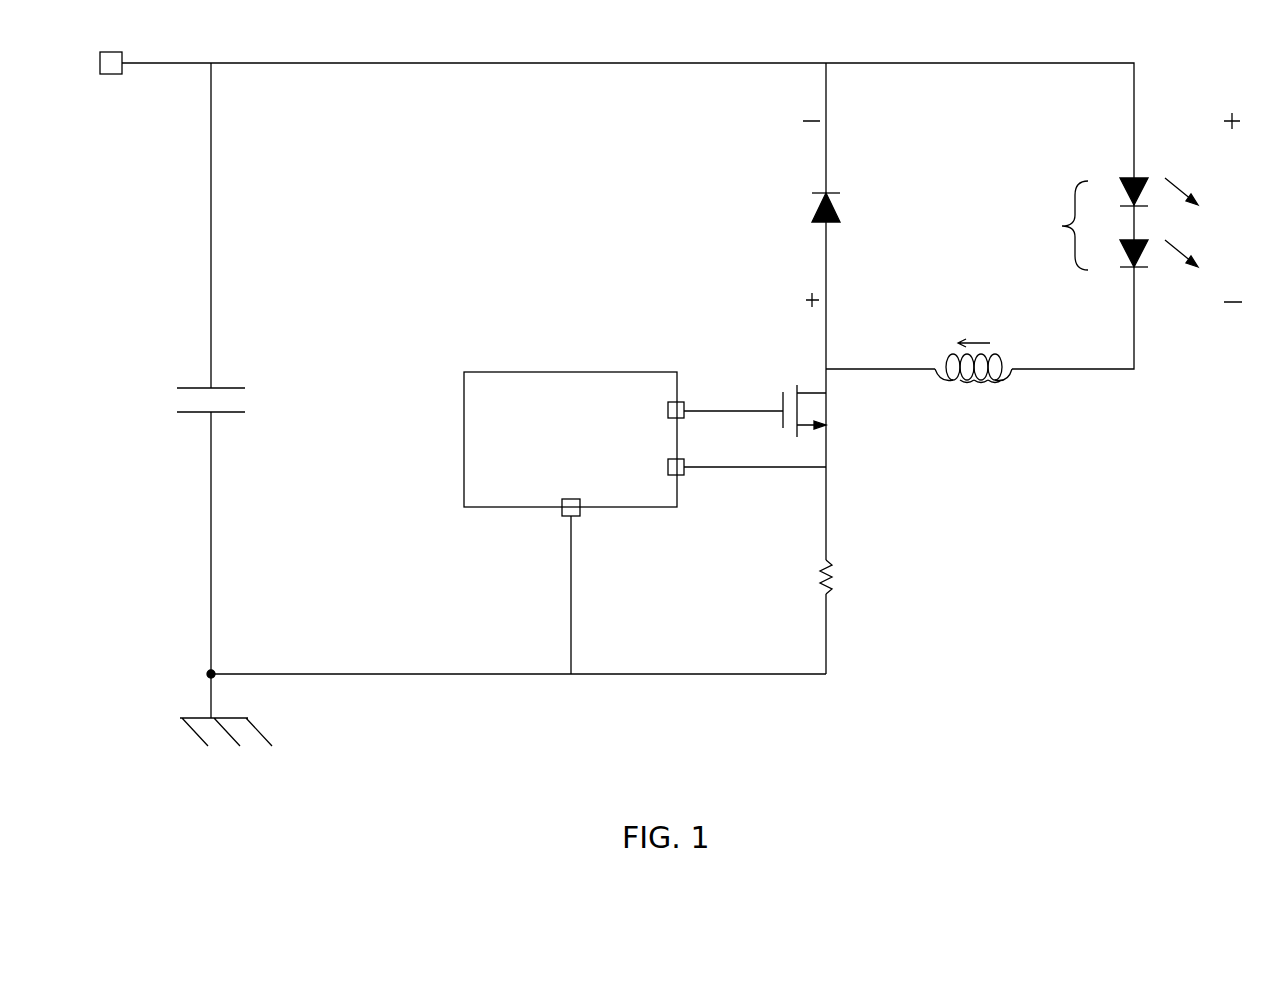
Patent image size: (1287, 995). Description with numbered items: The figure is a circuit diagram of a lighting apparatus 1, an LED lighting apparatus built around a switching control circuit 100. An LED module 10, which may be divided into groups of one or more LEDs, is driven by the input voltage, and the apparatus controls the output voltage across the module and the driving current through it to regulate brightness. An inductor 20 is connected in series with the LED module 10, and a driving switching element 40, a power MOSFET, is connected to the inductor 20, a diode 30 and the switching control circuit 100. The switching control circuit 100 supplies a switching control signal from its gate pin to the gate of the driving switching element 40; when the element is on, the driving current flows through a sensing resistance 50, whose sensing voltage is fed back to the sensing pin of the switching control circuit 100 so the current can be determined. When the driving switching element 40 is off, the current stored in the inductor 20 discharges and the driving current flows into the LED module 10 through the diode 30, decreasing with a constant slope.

The lighting apparatus 1 is at (534, 213).
The LED module 10 is at (1075, 188).
The inductor 20 is at (1000, 385).
The diode 30 is at (835, 190).
The driving switching element 40 is at (798, 405).
The sensing resistance 50 is at (834, 592).
The switching control circuit 100 is at (492, 508).